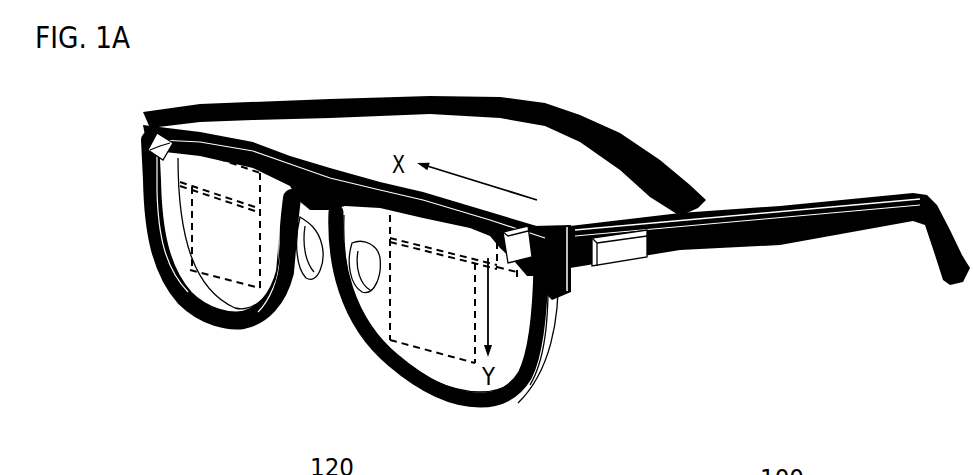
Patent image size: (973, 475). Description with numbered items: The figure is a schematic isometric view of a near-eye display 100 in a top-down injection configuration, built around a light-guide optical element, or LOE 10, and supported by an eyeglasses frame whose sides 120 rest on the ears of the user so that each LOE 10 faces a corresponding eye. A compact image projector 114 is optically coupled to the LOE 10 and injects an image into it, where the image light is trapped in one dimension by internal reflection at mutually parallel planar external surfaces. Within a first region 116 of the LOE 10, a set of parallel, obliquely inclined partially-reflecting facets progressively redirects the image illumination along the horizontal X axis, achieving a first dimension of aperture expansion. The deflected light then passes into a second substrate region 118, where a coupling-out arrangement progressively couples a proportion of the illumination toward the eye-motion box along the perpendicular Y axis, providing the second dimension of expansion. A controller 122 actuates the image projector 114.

The near-eye display 100 is at (720, 84).
The light-guide optical element (LOE) 10 is at (193, 278).
The image projector 114 is at (594, 328).
The first region 116 is at (152, 218).
The second substrate region 118 is at (227, 272).
The sides 120 is at (345, 108).
The controller 122 is at (623, 265).